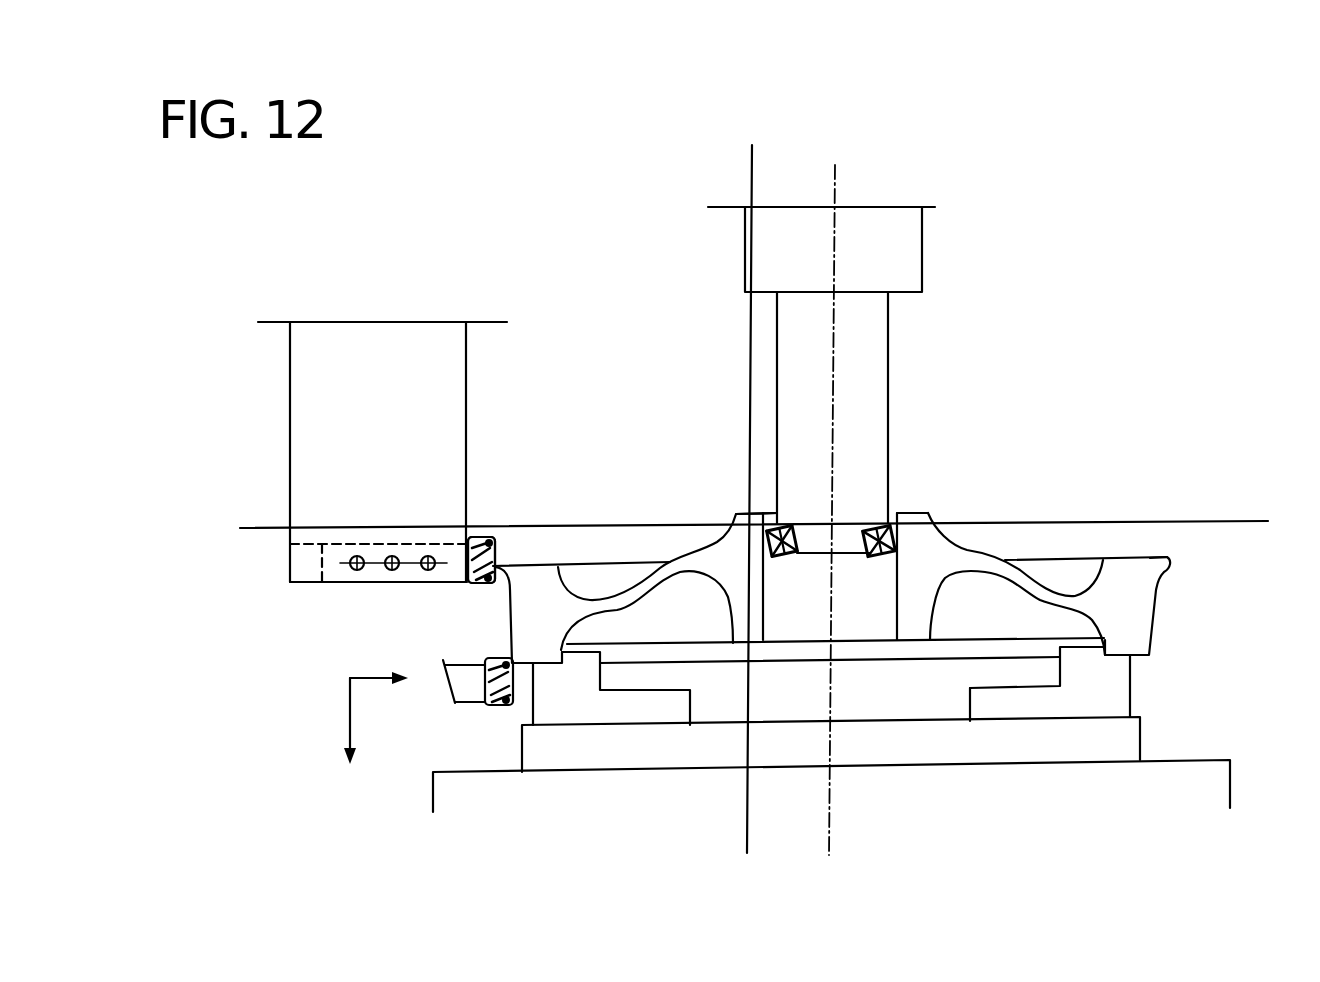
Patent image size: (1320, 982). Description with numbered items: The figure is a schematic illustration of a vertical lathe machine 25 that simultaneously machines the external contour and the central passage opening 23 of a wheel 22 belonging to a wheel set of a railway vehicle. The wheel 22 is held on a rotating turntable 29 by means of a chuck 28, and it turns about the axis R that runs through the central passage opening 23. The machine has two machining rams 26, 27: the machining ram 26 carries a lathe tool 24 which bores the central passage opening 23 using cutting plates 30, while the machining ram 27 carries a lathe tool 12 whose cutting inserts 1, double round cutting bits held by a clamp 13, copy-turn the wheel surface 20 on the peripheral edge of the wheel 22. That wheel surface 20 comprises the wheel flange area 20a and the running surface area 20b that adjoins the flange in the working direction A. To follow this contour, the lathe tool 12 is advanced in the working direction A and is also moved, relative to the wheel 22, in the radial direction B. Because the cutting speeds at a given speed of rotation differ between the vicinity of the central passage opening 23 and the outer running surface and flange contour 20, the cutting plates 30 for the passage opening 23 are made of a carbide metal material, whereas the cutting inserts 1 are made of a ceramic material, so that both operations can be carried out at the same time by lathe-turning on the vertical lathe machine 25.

The cutting insert 1 is at (490, 538).
The lathe tool 12 is at (340, 580).
The clamp tab 13 is at (472, 537).
The wheel surface 20 is at (832, 569).
The wheel flange area 20a is at (502, 570).
The running surface area 20b is at (1153, 635).
The wheel 22 is at (1137, 605).
The central passage opening 23 is at (872, 587).
The lathe tool 24 is at (868, 435).
The vertical lathe machine 25 is at (1132, 350).
The machining ram 26 is at (905, 255).
The machining ram 27 is at (443, 402).
The chuck 28 is at (1107, 702).
The turntable 29 is at (1143, 757).
The cutting plate 30 is at (790, 538).
The rotation axis R is at (838, 182).
The working direction A is at (348, 728).
The radial direction B is at (383, 683).